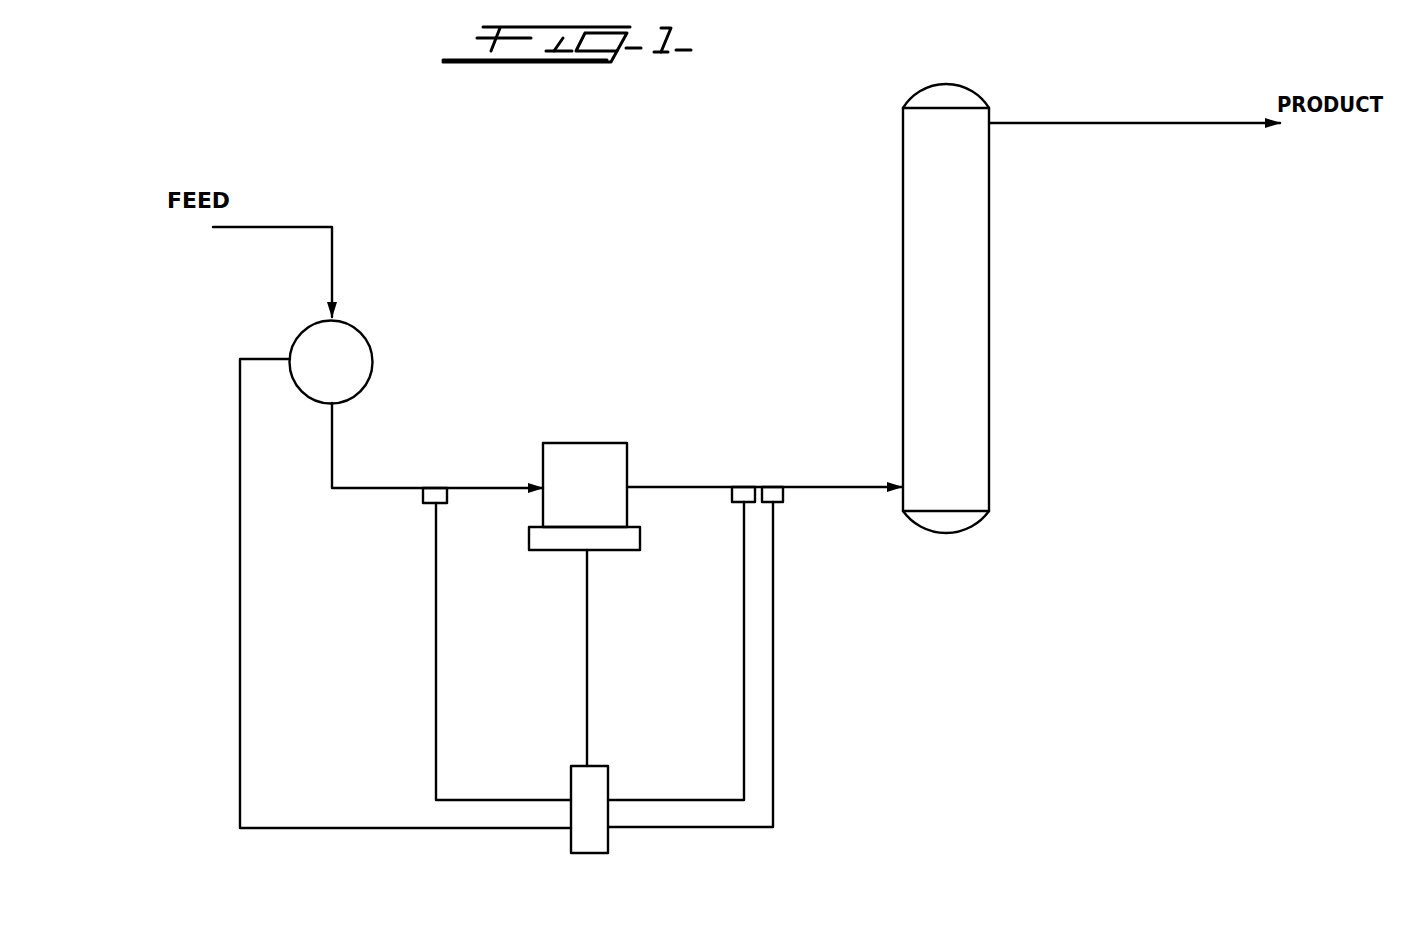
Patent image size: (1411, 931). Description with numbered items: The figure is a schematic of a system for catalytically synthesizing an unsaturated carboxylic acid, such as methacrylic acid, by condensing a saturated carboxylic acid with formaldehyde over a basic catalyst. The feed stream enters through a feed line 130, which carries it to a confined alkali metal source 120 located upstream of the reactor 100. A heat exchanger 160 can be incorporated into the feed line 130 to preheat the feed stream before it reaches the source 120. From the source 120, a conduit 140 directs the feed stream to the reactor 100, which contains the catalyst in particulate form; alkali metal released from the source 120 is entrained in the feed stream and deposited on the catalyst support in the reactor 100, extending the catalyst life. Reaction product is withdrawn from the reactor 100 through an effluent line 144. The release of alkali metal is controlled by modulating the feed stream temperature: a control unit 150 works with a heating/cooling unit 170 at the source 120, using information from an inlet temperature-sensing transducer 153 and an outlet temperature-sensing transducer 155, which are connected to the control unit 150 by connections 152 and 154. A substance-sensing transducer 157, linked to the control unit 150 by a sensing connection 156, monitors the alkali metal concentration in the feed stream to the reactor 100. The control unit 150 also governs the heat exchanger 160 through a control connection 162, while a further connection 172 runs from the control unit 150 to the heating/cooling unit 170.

The reactor 100 is at (958, 307).
The confined alkali metal source 120 is at (578, 443).
The feed line 130 is at (285, 227).
The conduit 140 is at (687, 487).
The effluent line 144 is at (1083, 123).
The control unit 150 is at (585, 853).
The connection 152 is at (436, 650).
The inlet temperature-sensing transducer 153 is at (428, 503).
The connection 154 is at (745, 697).
The outlet temperature-sensing transducer 155 is at (735, 502).
The sensing connection 156 is at (773, 717).
The substance-sensing transducer 157 is at (778, 502).
The heat exchanger 160 is at (362, 327).
The control connection 162 is at (240, 608).
The heating/cooling unit 170 is at (553, 540).
The control signal line to heater 172 is at (587, 730).